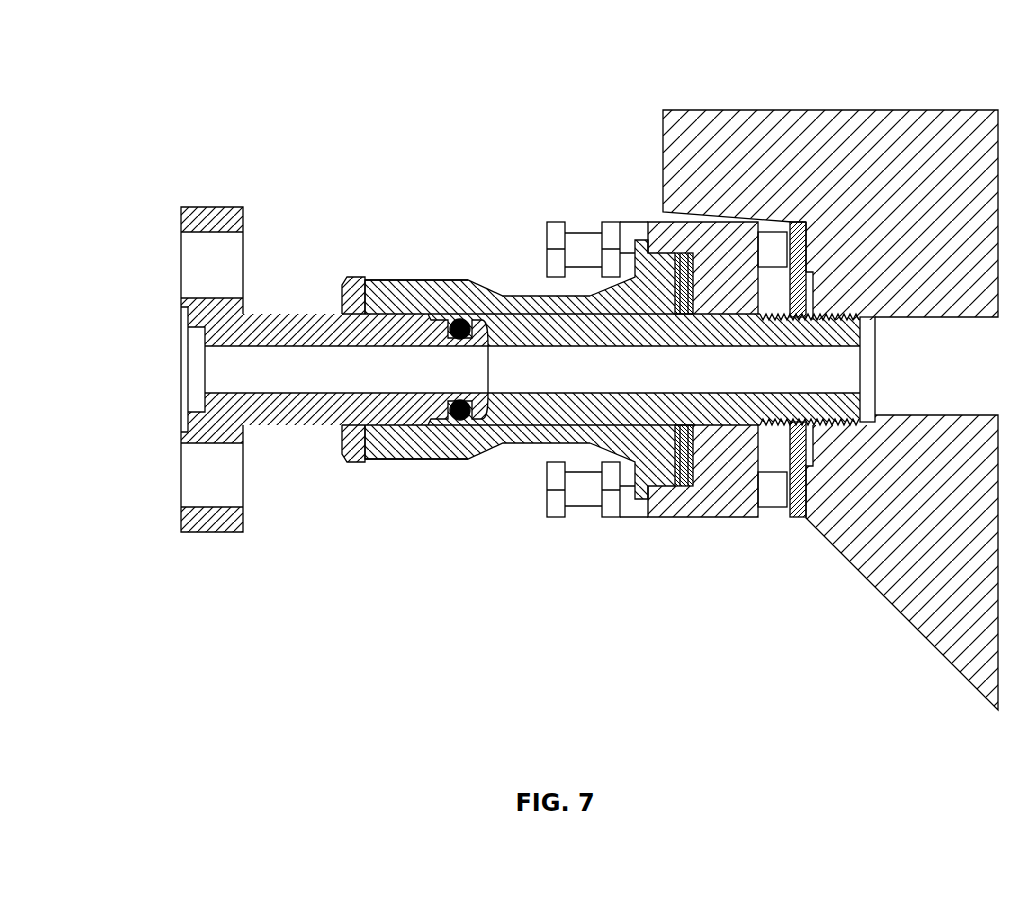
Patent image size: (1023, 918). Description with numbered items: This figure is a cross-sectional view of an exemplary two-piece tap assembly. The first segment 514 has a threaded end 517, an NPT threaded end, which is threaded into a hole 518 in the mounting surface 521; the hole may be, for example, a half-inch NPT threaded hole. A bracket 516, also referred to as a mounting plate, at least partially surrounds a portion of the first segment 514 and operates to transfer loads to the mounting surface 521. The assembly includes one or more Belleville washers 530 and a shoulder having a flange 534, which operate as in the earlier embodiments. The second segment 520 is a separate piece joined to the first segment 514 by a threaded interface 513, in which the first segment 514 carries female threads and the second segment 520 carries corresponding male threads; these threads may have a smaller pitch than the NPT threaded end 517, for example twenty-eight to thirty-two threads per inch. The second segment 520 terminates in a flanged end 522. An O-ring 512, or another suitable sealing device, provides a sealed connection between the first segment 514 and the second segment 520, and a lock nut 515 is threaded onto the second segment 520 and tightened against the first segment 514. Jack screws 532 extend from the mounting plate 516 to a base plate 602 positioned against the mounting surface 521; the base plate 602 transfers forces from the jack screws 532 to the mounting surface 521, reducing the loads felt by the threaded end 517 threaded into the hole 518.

The O-ring 512 is at (459, 320).
The threaded interface 513 is at (400, 310).
The first segment 514 is at (413, 280).
The lock nut 515 is at (345, 312).
The bracket 516 is at (697, 233).
The threaded end 517 is at (870, 317).
The hole 518 is at (874, 317).
The second segment 520 is at (308, 313).
The mounting surface 521 is at (827, 317).
The flanged end 522 is at (192, 207).
The Belleville washer 530 is at (683, 487).
The jack screw 532 is at (557, 233).
The flange 534 is at (642, 240).
The base plate 602 is at (797, 515).